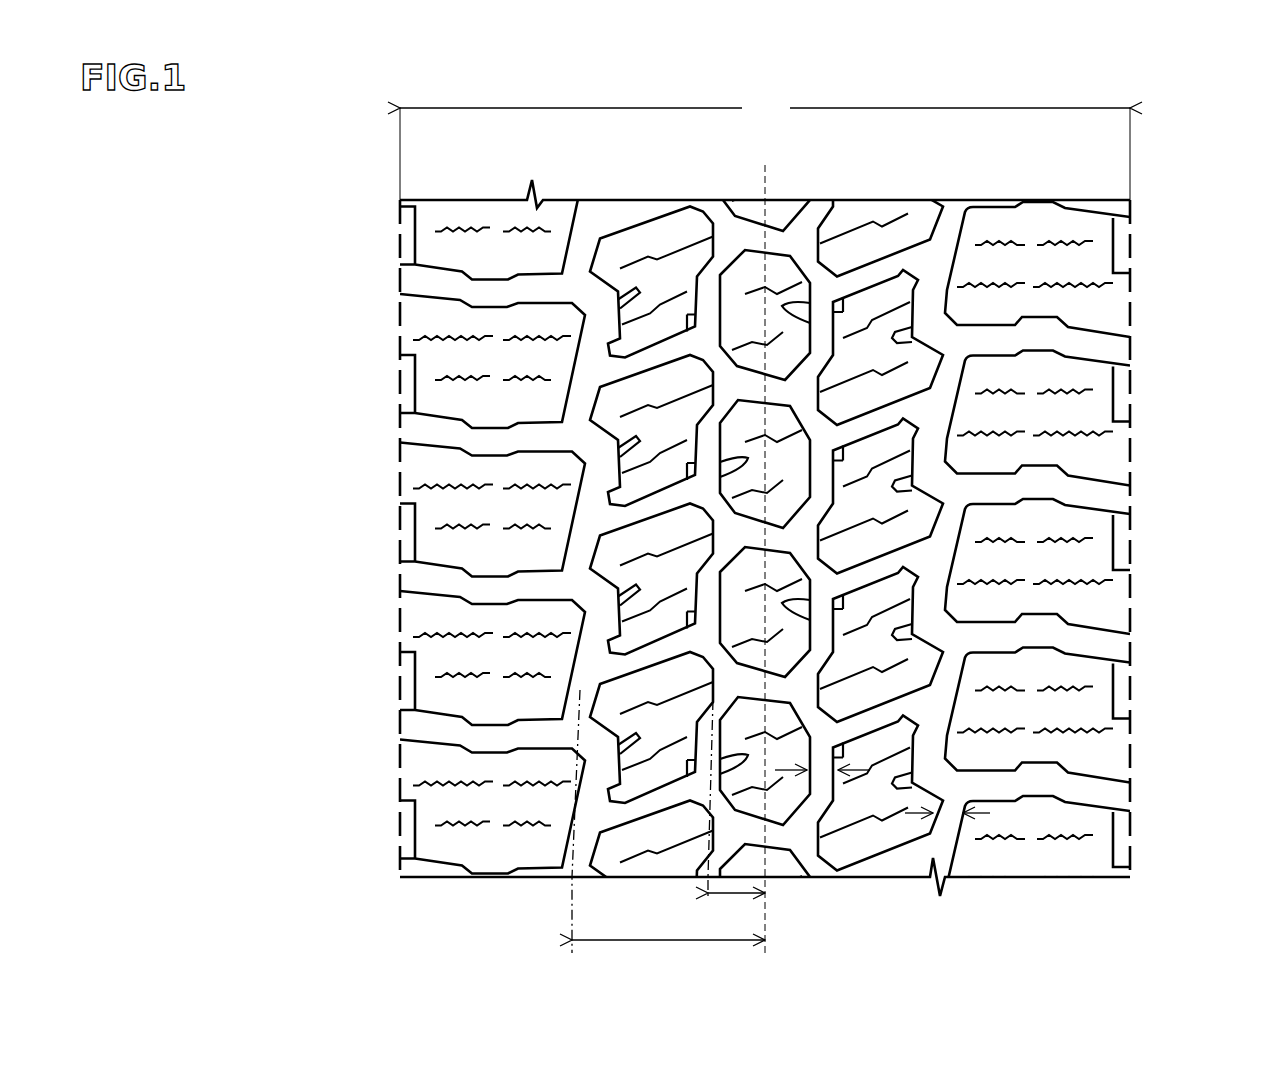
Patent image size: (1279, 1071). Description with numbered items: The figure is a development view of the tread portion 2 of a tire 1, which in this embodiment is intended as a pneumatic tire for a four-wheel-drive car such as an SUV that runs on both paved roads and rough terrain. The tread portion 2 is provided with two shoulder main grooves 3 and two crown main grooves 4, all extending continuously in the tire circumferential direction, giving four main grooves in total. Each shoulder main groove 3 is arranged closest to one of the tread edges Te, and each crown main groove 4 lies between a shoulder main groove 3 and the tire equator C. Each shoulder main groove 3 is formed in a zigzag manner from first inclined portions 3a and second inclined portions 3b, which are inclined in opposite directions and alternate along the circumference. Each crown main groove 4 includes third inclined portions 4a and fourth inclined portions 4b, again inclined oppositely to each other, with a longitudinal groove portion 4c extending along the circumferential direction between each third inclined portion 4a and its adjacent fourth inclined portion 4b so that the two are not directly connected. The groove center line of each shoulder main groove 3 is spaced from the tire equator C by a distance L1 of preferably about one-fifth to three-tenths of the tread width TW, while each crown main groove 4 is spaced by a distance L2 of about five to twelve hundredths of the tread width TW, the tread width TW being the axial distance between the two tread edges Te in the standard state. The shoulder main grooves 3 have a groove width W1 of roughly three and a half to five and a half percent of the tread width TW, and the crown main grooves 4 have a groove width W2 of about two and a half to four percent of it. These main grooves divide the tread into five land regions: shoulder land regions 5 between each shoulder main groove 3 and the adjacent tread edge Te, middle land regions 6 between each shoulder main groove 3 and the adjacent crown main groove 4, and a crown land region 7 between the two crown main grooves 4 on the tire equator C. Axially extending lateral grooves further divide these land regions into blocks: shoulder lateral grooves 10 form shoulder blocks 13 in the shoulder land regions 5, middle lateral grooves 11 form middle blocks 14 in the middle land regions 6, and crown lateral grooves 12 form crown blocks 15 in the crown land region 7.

The tire 1 is at (1020, 190).
The tread portion 2 is at (975, 195).
The shoulder main grooves 3 is at (588, 240).
The first inclined portions 3a is at (592, 520).
The second inclined portions 3b is at (595, 597).
The crown main grooves 4 is at (723, 250).
The third inclined portions 4a is at (815, 622).
The fourth inclined portions 4b is at (825, 745).
The longitudinal groove portions 4c is at (812, 663).
The shoulder land regions 5 is at (497, 250).
The middle land regions 6 is at (662, 245).
The crown land region 7 is at (781, 275).
The shoulder lateral grooves 10 is at (480, 298).
The middle lateral grooves 11 is at (657, 357).
The crown lateral grooves 12 is at (782, 540).
The shoulder blocks 13 is at (495, 660).
The middle blocks 14 is at (665, 430).
The crown blocks 15 is at (785, 458).
The tread width TW is at (765, 146).
The tread edges Te is at (400, 222).
The tire equator C is at (765, 552).
The distance L1 is at (668, 835).
The distance L2 is at (736, 815).
The groove width W1 is at (950, 823).
The groove width W2 is at (818, 775).